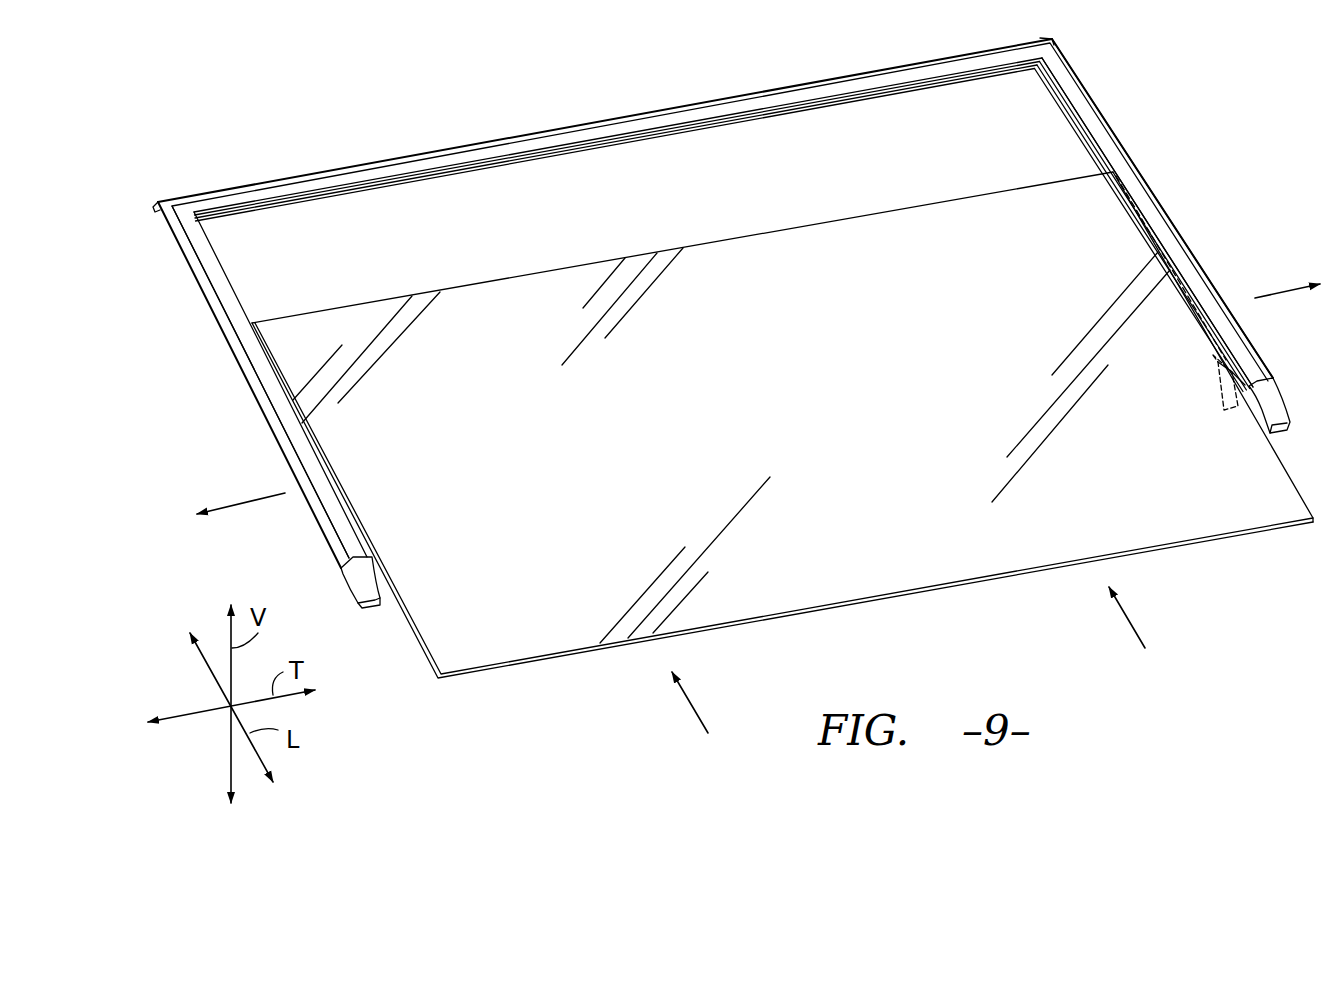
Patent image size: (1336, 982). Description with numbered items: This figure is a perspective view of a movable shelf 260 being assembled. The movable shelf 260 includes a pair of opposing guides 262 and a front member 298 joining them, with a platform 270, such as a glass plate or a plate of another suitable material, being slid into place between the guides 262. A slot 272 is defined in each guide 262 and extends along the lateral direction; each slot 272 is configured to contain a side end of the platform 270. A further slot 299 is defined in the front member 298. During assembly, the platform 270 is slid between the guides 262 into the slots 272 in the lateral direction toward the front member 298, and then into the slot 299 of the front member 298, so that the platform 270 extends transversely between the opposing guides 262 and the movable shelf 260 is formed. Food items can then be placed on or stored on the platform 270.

The movable shelf 260 is at (1188, 107).
The guide 262 is at (1167, 232).
The platform 270 is at (1200, 508).
The slot 272 is at (1052, 89).
The front member 298 is at (500, 137).
The slot 299 is at (629, 142).